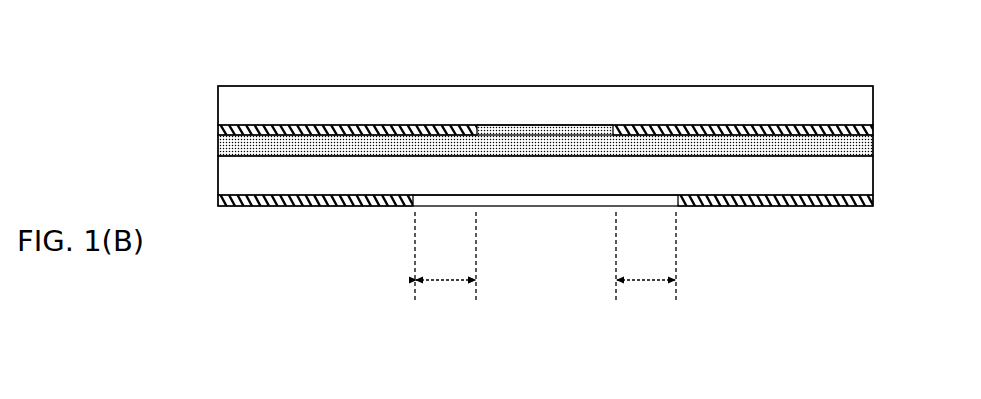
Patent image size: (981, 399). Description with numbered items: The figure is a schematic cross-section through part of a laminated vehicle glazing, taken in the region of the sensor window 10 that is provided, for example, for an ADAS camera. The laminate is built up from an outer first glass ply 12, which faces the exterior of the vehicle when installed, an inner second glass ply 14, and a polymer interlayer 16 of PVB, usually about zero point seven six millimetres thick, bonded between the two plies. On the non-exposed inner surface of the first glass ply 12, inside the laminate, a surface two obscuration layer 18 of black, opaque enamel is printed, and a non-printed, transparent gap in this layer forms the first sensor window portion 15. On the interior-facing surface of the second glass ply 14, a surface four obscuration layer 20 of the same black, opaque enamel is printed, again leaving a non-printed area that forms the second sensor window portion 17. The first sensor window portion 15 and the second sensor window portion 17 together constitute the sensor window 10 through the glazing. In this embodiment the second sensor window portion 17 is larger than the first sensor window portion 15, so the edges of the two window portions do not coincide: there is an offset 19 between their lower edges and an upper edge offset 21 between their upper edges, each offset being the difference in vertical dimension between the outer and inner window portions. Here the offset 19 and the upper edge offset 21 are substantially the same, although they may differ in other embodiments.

The sensor window 10 is at (522, 297).
The outer first glass ply 12 is at (353, 97).
The inner second glass ply 14 is at (828, 183).
The first sensor window portion 15 is at (522, 125).
The polymer interlayer 16 is at (248, 149).
The second sensor window portion 17 is at (578, 196).
The surface 2 obscuration layer 18 is at (253, 127).
The offset 19 is at (445, 266).
The surface 4 obscuration layer 20 is at (340, 205).
The upper edge offset 21 is at (646, 266).